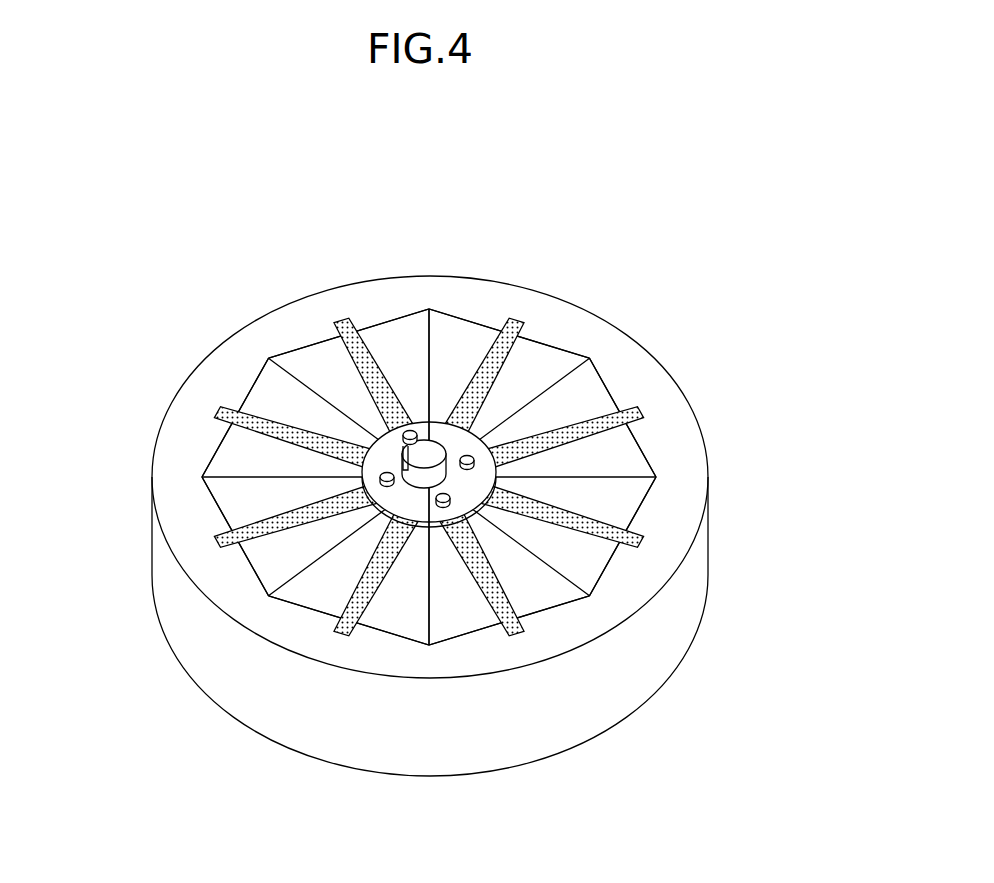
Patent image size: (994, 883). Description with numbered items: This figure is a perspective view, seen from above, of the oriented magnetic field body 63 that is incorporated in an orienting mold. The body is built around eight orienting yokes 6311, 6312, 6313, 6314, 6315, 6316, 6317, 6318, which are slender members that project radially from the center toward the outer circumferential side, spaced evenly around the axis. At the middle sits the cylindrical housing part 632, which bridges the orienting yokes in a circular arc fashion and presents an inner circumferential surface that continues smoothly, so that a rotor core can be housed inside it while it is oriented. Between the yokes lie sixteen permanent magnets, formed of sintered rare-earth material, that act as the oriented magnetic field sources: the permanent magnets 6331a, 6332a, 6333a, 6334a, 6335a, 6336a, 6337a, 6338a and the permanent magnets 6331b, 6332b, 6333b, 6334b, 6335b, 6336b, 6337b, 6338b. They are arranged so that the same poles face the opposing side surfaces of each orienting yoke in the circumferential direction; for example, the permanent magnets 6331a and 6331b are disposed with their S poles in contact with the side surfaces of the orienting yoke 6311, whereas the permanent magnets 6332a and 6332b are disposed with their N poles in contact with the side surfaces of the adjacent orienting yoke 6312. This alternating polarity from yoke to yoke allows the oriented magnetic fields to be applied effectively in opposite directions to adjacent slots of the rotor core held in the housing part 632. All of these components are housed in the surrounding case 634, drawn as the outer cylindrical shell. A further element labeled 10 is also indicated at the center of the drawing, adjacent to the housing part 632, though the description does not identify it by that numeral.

The parting line / seam of impeller 10 is at (441, 400).
The oriented magnetic field body 63 is at (755, 863).
The housing part 632 is at (420, 418).
The case 634 is at (167, 408).
The orienting yoke 6311 is at (640, 413).
The orienting yoke 6312 is at (641, 541).
The orienting yoke 6313 is at (517, 632).
The orienting yoke 6314 is at (343, 632).
The orienting yoke 6315 is at (218, 543).
The orienting yoke 6316 is at (218, 415).
The orienting yoke 6317 is at (343, 322).
The orienting yoke 6318 is at (517, 322).
The permanent magnet 6331a is at (588, 388).
The permanent magnet 6331b is at (620, 453).
The permanent magnet 6332a is at (610, 500).
The permanent magnet 6332b is at (587, 562).
The permanent magnet 6333a is at (538, 598).
The permanent magnet 6333b is at (457, 612).
The permanent magnet 6334a is at (393, 617).
The permanent magnet 6334b is at (310, 593).
The permanent magnet 6335a is at (267, 560).
The permanent magnet 6335b is at (235, 498).
The permanent magnet 6336a is at (247, 455).
The permanent magnet 6336b is at (273, 393).
The permanent magnet 6337a is at (320, 362).
The permanent magnet 6337b is at (393, 340).
The permanent magnet 6338a is at (468, 345).
The permanent magnet 6338b is at (555, 357).